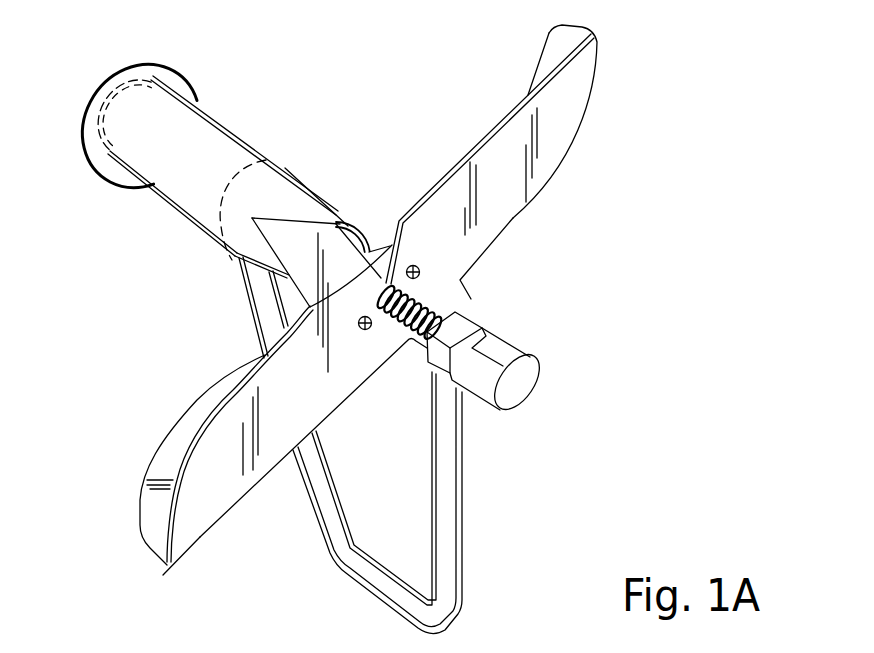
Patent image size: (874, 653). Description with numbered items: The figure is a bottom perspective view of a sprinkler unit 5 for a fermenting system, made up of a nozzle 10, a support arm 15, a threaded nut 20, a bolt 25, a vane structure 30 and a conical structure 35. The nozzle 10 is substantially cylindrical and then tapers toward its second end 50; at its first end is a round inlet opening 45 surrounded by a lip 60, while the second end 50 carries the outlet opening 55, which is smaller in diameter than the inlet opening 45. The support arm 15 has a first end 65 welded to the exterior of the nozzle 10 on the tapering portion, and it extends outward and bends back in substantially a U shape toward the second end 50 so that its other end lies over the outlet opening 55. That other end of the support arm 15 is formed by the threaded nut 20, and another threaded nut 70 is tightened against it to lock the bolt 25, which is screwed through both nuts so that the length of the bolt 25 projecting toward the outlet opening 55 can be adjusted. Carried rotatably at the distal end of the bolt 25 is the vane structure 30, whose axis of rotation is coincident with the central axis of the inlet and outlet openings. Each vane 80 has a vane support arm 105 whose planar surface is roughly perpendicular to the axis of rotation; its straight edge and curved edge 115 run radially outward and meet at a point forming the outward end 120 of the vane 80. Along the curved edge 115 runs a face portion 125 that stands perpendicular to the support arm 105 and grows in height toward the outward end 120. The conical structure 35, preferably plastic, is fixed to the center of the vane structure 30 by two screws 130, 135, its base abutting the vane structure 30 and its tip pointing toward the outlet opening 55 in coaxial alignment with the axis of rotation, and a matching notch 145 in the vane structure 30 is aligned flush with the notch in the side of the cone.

The sprinkler unit 5 is at (566, 344).
The nozzle 10 is at (222, 138).
The support arm 15 is at (446, 540).
The threaded nut 20 is at (457, 313).
The bolt 25 is at (512, 387).
The vane structure 30 is at (520, 215).
The conical structure 35 is at (388, 215).
The inlet opening 45 is at (100, 75).
The second end 50 is at (334, 221).
The outlet opening 55 is at (381, 258).
The lip 60 is at (127, 77).
The first end of support arm 65 is at (240, 264).
The threaded nut 70 is at (474, 318).
The vane 80 is at (238, 537).
The vane support arm 105 is at (227, 476).
The curved edge 115 is at (178, 515).
The outward end 120 is at (168, 567).
The face portion 125 is at (143, 480).
The screw 130 is at (367, 330).
The screw 135 is at (420, 268).
The matching notch 145 is at (308, 308).